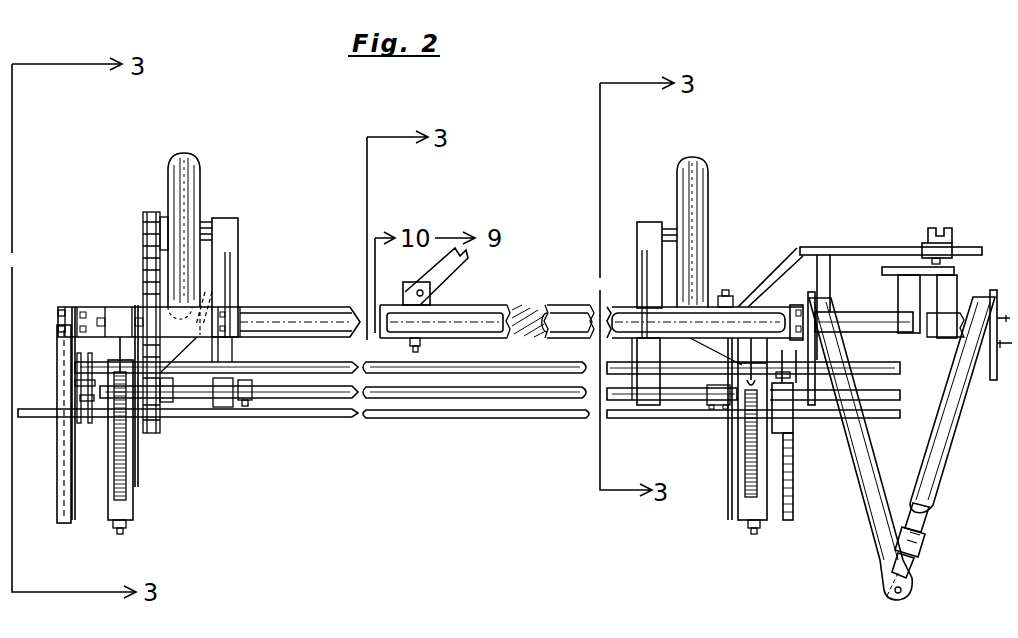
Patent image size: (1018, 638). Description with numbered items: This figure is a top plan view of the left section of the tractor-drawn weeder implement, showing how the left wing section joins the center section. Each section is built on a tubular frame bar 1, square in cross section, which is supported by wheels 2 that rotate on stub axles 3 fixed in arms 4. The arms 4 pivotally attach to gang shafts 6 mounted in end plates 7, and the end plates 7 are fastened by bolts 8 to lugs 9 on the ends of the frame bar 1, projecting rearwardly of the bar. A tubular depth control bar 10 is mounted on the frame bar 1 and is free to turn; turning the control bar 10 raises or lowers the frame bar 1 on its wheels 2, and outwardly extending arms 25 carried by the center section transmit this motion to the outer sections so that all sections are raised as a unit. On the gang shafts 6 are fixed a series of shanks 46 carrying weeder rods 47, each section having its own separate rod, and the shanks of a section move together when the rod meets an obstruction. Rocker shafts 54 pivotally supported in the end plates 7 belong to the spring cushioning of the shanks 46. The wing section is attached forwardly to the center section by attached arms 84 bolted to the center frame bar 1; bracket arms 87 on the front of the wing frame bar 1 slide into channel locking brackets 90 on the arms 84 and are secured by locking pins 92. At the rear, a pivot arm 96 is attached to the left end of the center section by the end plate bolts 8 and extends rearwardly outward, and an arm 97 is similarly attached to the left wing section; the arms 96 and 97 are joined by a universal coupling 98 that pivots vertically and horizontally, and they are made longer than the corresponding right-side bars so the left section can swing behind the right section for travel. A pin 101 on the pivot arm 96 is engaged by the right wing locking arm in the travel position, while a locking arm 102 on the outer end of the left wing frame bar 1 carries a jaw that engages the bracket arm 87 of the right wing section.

The tubular frame bar 1 is at (328, 307).
The wheels 2 is at (700, 158).
The stub axles 3 is at (208, 215).
The arms 4 is at (229, 218).
The gang shafts 6 is at (476, 395).
The end plates 7 is at (72, 307).
The bolts 8 is at (61, 307).
The lugs 9 is at (78, 307).
The tubular depth control bar 10 is at (269, 307).
The outwardly extending arms 25 is at (888, 312).
The shanks 46 is at (797, 465).
The weeder rods 47 is at (513, 420).
The rocker shafts 54 is at (418, 362).
The attached arms 84 is at (960, 262).
The bracket arms 87 is at (803, 247).
The channel locking brackets 90 is at (952, 243).
The locking pins 92 is at (928, 236).
The pivot arm 96 is at (945, 468).
The arm 97 is at (870, 465).
The universal coupling 98 is at (918, 573).
The pin 101 is at (952, 495).
The locking arm 102 is at (67, 523).